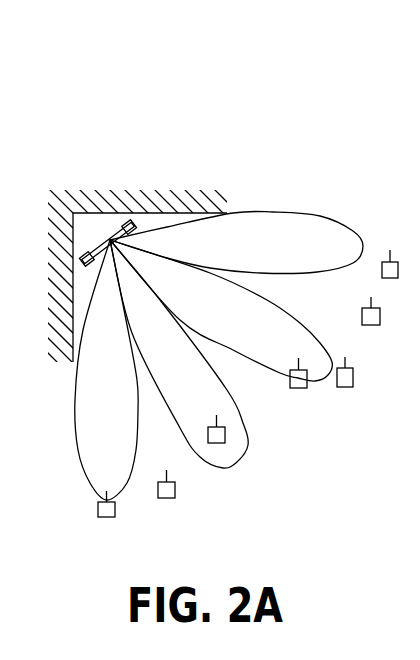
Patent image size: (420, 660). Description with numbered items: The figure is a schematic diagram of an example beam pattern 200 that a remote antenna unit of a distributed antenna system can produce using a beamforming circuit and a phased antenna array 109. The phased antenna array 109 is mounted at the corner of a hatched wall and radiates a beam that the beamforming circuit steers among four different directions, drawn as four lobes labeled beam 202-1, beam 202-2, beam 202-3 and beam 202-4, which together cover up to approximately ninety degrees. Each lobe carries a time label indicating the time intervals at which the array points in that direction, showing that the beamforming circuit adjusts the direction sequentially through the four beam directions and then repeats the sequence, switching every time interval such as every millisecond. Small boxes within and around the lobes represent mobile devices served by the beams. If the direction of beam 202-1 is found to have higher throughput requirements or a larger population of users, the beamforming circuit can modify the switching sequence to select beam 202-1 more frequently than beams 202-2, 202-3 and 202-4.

The beam pattern 200 is at (138, 100).
The phased antenna array 109 is at (105, 237).
The beam 202-1 is at (314, 333).
The beam 202-2 is at (243, 447).
The beam 202-3 is at (80, 468).
The beam 202-4 is at (280, 213).